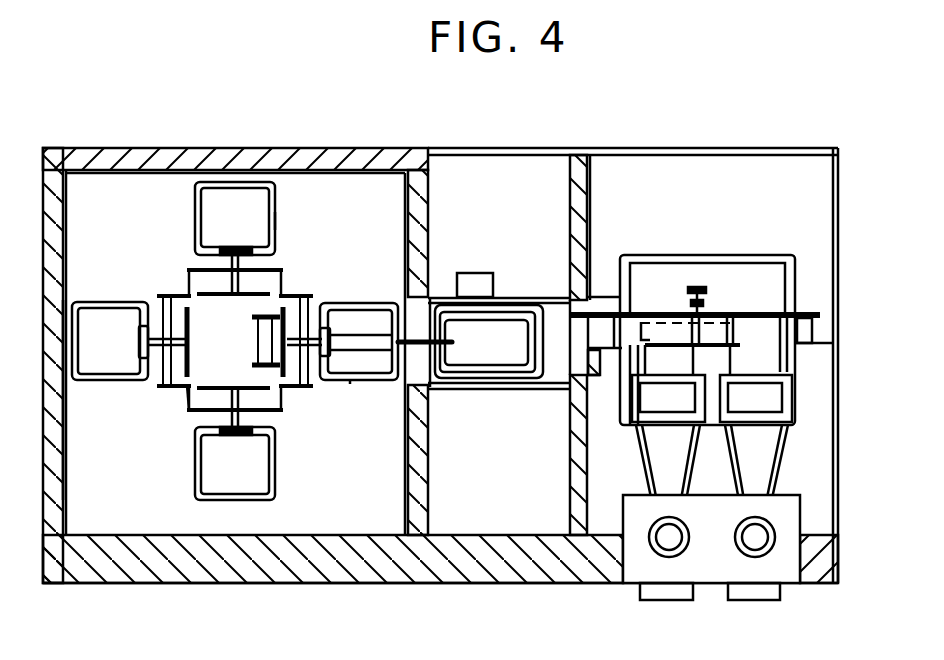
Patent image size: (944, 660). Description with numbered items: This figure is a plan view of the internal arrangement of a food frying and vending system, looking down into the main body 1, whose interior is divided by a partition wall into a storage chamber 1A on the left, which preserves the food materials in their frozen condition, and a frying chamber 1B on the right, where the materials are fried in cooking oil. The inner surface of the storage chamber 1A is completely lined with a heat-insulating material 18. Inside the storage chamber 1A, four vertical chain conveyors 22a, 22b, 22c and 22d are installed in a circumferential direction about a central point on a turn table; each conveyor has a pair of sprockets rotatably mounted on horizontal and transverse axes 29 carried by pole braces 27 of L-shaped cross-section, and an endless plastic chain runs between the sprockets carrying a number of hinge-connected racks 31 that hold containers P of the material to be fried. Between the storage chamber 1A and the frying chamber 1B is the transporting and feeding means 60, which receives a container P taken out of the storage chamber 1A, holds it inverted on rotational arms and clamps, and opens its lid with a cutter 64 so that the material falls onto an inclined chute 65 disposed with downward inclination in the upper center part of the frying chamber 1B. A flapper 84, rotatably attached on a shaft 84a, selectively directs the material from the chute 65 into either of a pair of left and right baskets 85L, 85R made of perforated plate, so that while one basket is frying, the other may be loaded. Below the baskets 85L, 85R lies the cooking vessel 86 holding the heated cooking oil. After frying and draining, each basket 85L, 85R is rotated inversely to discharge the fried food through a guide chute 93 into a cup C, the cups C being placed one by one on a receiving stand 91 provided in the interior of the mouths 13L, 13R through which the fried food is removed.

The main body 1 is at (406, 147).
The storage chamber 1A is at (120, 515).
The frying chamber 1B is at (682, 152).
The heat-insulating material 18 is at (62, 455).
The vertical chain conveyor 22a is at (307, 214).
The vertical chain conveyor 22b is at (290, 412).
The vertical chain conveyor 22c is at (158, 378).
The vertical chain conveyor 22d is at (193, 262).
The pole brace 27 is at (283, 284).
The transverse axis 29 is at (200, 412).
The rack 31 is at (276, 212).
The container P is at (236, 193).
The transporting and feeding means 60 is at (500, 292).
The cutter 64 is at (586, 352).
The inclined chute 65 is at (628, 300).
The flapper 84 is at (680, 312).
The shaft 84a is at (700, 308).
The cooking vessel 86 is at (746, 262).
The left basket 85L is at (652, 402).
The right basket 85R is at (795, 386).
The guide chute 93 is at (775, 466).
The receiving stand 91 is at (636, 562).
The cup C is at (760, 541).
The left mouth 13L is at (665, 602).
The right mouth 13R is at (752, 602).